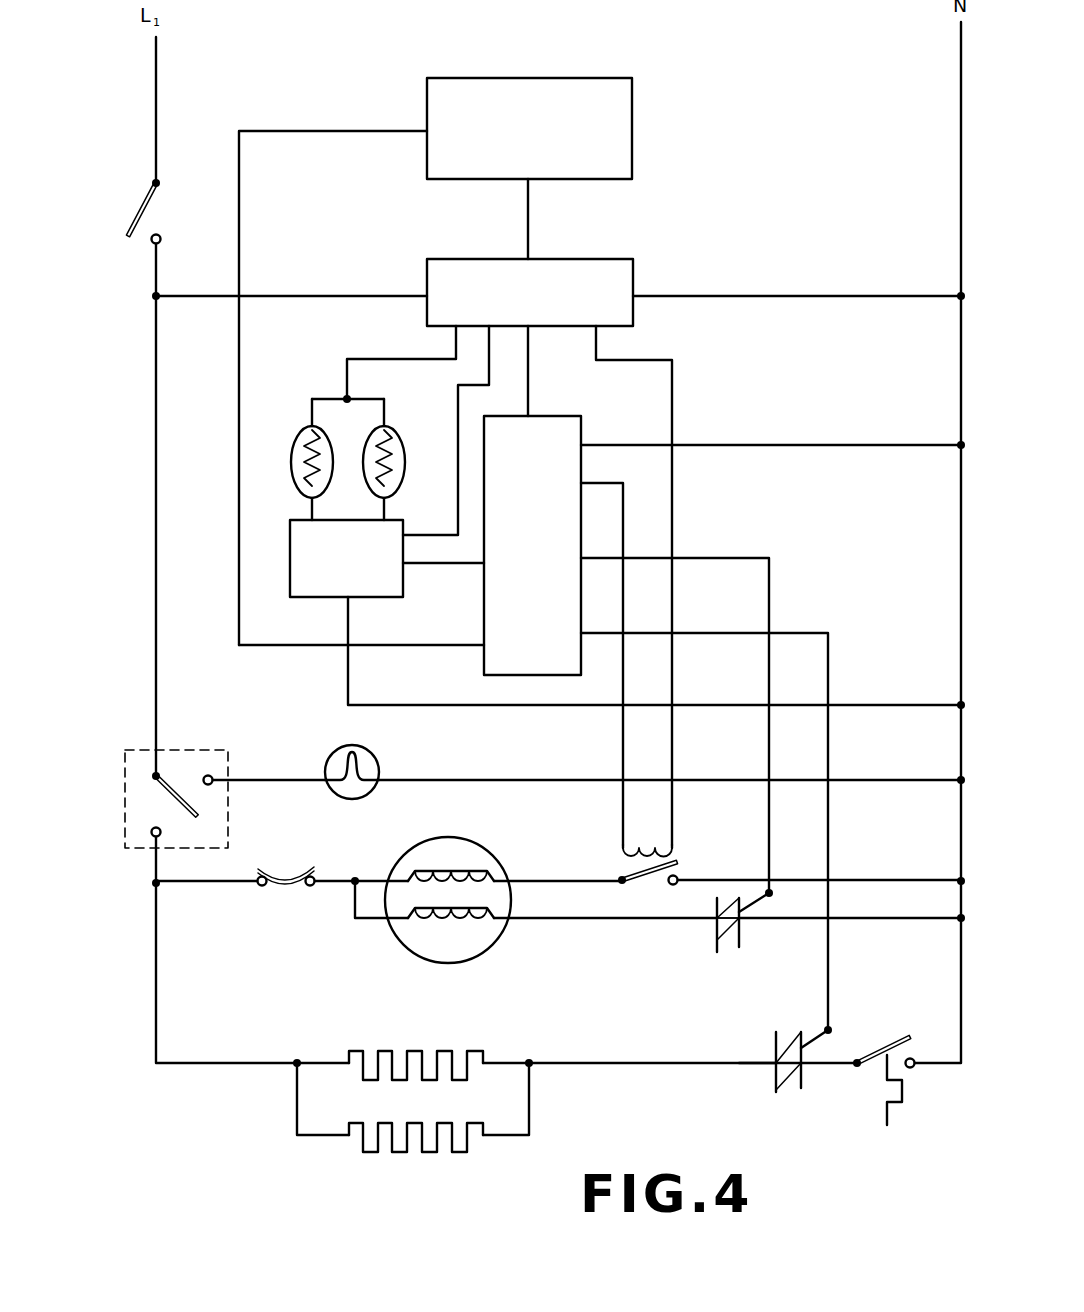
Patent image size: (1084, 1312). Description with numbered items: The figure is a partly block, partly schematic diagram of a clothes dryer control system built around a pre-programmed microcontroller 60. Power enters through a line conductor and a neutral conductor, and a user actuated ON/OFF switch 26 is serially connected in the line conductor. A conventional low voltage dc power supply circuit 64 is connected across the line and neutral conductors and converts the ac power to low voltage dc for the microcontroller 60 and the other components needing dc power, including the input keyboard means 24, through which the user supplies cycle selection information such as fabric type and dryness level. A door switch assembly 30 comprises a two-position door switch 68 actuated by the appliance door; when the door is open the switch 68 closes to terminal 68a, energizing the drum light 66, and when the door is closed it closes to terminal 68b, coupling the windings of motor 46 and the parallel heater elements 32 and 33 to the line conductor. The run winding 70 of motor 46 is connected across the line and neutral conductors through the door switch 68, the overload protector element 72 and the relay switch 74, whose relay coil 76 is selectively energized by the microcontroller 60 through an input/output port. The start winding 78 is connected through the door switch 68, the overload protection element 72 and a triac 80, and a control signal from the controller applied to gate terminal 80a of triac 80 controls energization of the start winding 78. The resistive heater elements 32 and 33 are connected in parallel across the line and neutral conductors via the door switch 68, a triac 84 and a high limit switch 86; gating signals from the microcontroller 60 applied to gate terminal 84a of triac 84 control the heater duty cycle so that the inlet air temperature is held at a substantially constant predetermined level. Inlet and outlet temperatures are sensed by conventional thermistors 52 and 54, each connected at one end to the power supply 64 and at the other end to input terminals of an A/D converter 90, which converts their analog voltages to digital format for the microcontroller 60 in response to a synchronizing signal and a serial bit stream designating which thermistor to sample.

The input keyboard means 24 is at (590, 78).
The ON/OFF switch 26 is at (148, 216).
The door switch assembly 30 is at (197, 747).
The heater element 32 is at (440, 1051).
The heater element 33 is at (400, 1152).
The motor 46 is at (495, 858).
The thermistor 52 is at (292, 443).
The thermistor 54 is at (402, 443).
The microcontroller 60 is at (552, 416).
The dc power supply circuit 64 is at (608, 259).
The drum light 66 is at (370, 752).
The door switch 68 is at (178, 795).
The terminal 68a is at (208, 785).
The terminal 68b is at (150, 838).
The run winding 70 is at (420, 868).
The overload protector element 72 is at (282, 872).
The relay switch 74 is at (650, 873).
The relay coil 76 is at (660, 845).
The start winding 78 is at (425, 924).
The triac 80 is at (727, 948).
The gate terminal 80a is at (772, 890).
The triac 84 is at (790, 1090).
The gate terminal 84a is at (832, 1028).
The high limit switch 86 is at (878, 1068).
The A/D converter 90 is at (383, 599).